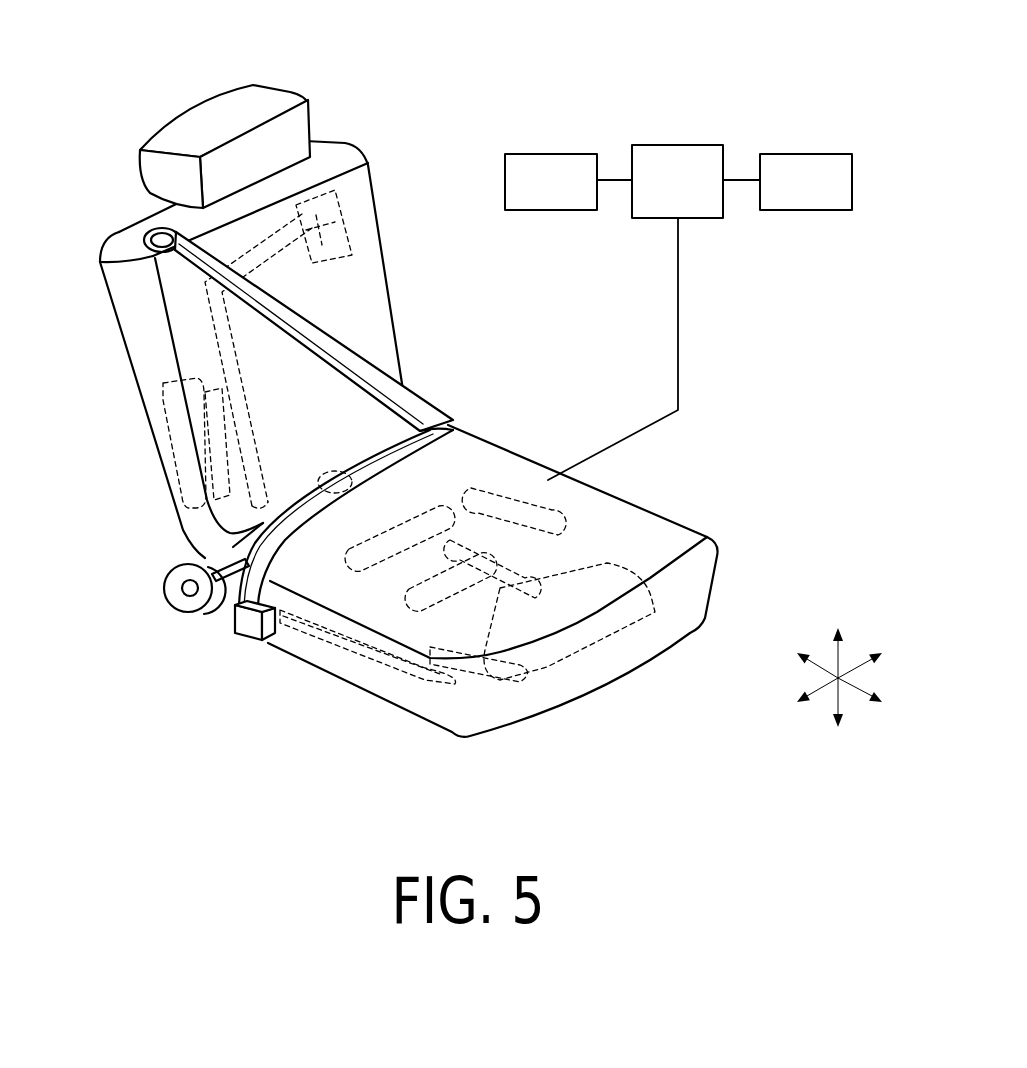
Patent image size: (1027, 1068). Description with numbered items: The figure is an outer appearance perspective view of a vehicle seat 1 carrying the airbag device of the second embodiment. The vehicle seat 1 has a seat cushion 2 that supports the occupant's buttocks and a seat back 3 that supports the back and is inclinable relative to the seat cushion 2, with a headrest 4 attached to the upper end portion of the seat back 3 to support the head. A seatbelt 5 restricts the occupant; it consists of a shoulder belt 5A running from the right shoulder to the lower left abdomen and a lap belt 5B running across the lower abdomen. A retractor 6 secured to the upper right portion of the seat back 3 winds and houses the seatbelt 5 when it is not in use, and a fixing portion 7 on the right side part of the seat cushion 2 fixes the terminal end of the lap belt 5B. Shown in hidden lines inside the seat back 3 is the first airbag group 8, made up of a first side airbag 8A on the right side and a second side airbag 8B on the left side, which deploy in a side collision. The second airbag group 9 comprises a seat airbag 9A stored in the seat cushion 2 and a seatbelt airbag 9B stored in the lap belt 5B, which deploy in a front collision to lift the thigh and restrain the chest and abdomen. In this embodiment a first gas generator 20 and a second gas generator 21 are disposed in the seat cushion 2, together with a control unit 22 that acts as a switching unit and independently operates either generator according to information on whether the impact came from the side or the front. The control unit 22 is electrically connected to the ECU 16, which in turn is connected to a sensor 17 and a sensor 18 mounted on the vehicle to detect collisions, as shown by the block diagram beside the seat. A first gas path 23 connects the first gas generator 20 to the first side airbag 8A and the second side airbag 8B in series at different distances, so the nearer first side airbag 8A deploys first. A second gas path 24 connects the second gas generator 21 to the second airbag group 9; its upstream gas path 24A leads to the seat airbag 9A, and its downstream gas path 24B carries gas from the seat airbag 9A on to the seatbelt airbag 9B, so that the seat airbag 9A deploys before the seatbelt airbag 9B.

The vehicle seat 1 is at (494, 74).
The seat cushion 2 is at (673, 521).
The seat back 3 is at (374, 197).
The headrest 4 is at (280, 83).
The seatbelt 5 is at (425, 303).
The shoulder belt 5A is at (378, 366).
The lap belt 5B is at (440, 425).
The retractor 6 is at (150, 240).
The fixing portion 7 is at (247, 618).
The first airbag group 8 is at (58, 409).
The first side airbag 8A is at (153, 437).
The second side airbag 8B is at (155, 393).
The second airbag group 9 is at (278, 697).
The seat airbag 9A is at (417, 662).
The seatbelt airbag 9B is at (328, 560).
The ECU 16 is at (677, 145).
The sensor 17 is at (540, 153).
The sensor 18 is at (807, 153).
The first gas generator 20 is at (450, 497).
The second gas generator 21 is at (583, 493).
The control unit 22 is at (503, 490).
The first gas path 23 is at (197, 303).
The second gas path 24 is at (552, 788).
The upstream gas path 24A is at (528, 632).
The downstream gas path 24B is at (450, 683).